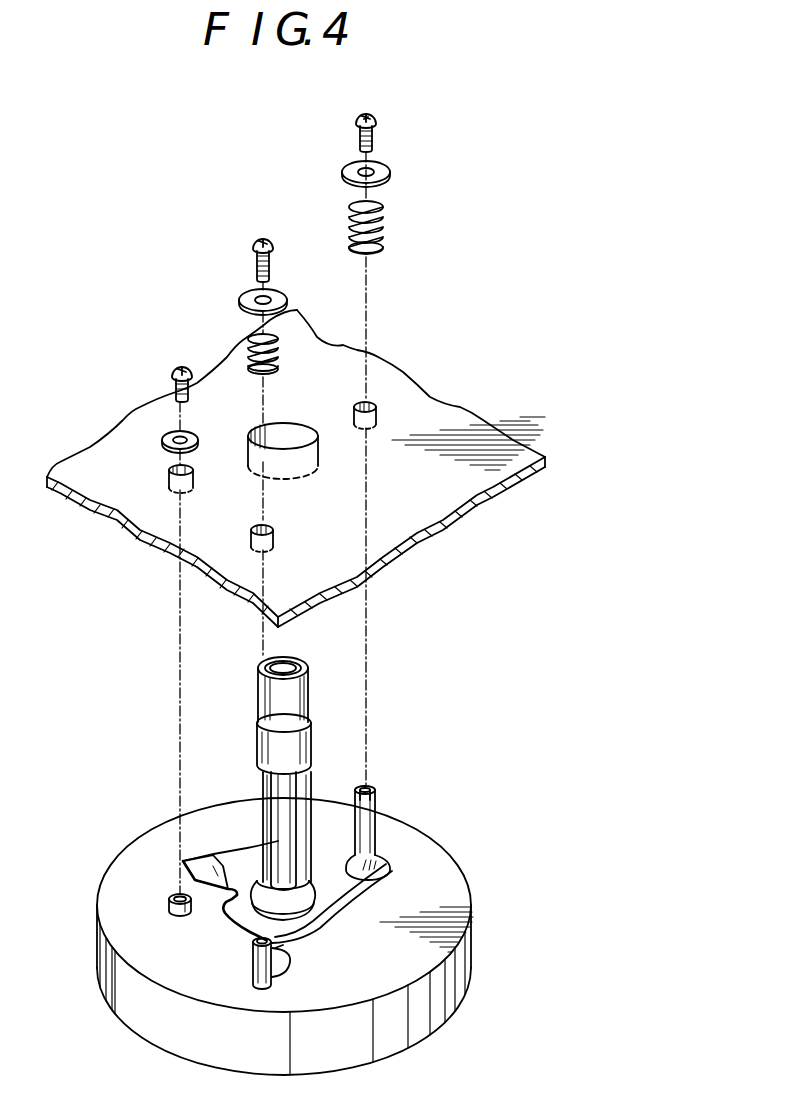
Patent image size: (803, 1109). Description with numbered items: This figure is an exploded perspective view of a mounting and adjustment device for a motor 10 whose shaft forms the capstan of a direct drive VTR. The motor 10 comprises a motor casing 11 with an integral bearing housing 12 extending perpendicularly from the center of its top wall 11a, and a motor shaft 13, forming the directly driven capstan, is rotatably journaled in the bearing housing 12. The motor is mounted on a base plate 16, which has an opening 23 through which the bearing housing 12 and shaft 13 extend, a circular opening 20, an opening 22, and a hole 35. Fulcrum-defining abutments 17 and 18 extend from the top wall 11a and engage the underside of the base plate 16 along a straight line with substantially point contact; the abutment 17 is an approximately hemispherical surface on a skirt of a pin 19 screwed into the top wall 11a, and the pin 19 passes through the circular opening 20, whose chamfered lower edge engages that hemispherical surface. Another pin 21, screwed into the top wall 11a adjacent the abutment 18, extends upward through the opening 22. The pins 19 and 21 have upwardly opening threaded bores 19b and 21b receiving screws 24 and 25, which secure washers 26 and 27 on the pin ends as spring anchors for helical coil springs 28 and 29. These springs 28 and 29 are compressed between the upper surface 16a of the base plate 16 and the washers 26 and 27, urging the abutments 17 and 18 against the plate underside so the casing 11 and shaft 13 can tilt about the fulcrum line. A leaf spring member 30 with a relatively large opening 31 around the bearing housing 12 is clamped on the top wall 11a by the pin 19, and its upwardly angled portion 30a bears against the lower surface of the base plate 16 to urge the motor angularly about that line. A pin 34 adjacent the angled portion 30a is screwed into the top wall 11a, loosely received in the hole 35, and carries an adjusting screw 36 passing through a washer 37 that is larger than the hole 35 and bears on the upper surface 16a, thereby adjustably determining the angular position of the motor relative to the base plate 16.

The motor 10 is at (249, 936).
The motor casing 11 is at (136, 1012).
The top wall of motor casing 11a is at (412, 836).
The bearing housing 12 is at (312, 776).
The motor shaft 13 is at (278, 789).
The base plate 16 is at (452, 396).
The upper surface of base plate 16a is at (420, 522).
The abutment 17 is at (392, 869).
The abutment 18 is at (288, 962).
The pin 19 is at (356, 829).
The threaded bore 19b is at (367, 788).
The circular opening 20 is at (371, 403).
The pin 21 is at (255, 965).
The threaded bore 21b is at (257, 940).
The opening 22 is at (272, 528).
The opening 23 is at (297, 435).
The screw 24 is at (373, 130).
The screw 25 is at (271, 258).
The washer 26 is at (386, 174).
The washer 27 is at (283, 300).
The helical coil spring 28 is at (384, 235).
The helical coil spring 29 is at (280, 357).
The leaf spring member 30 is at (327, 912).
The angled portion 30a is at (199, 869).
The opening 31 is at (313, 903).
The pin 34 is at (170, 908).
The hole 35 is at (193, 469).
The adjusting screw 36 is at (173, 379).
The washer 37 is at (196, 436).